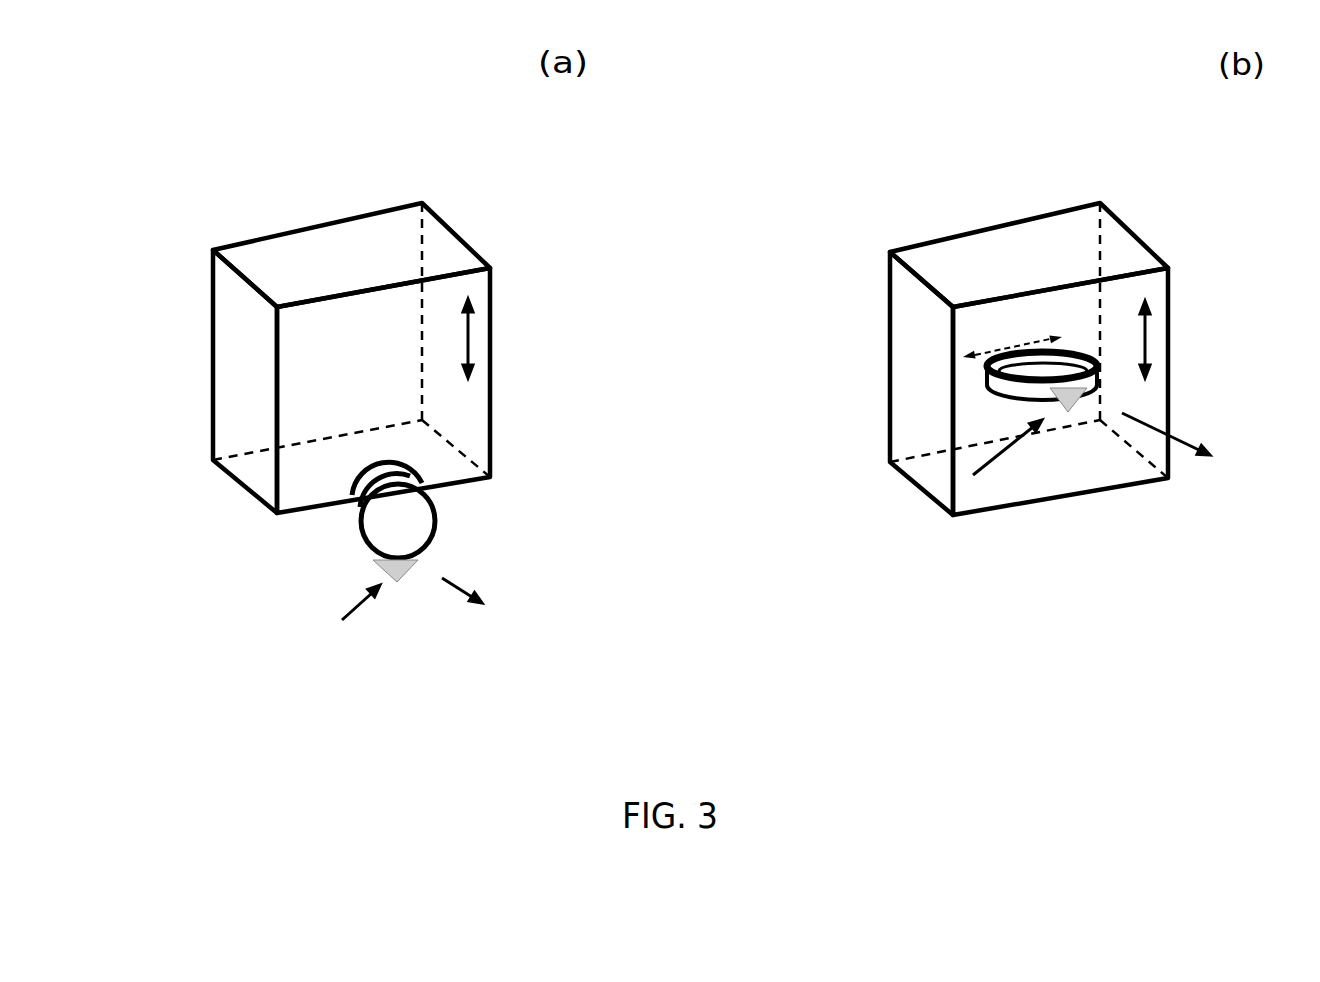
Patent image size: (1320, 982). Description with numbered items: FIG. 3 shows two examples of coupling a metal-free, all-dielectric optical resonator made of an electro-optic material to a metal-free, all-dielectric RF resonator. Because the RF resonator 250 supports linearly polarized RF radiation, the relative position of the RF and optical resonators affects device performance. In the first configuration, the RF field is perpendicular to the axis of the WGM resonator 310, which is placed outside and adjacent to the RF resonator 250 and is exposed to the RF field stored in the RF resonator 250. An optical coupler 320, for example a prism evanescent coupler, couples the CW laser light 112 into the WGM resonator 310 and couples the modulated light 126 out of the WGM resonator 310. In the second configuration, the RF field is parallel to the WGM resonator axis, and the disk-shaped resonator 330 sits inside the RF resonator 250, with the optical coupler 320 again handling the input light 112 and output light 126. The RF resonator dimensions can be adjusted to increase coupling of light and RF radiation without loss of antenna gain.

The CW laser light 112 is at (1022, 502).
The modulated light 126 is at (872, 562).
The RF resonator 250 is at (457, 229).
The WGM resonator 310 is at (427, 500).
The optical coupler 320 is at (422, 557).
The disk WGM resonator 330 is at (997, 370).